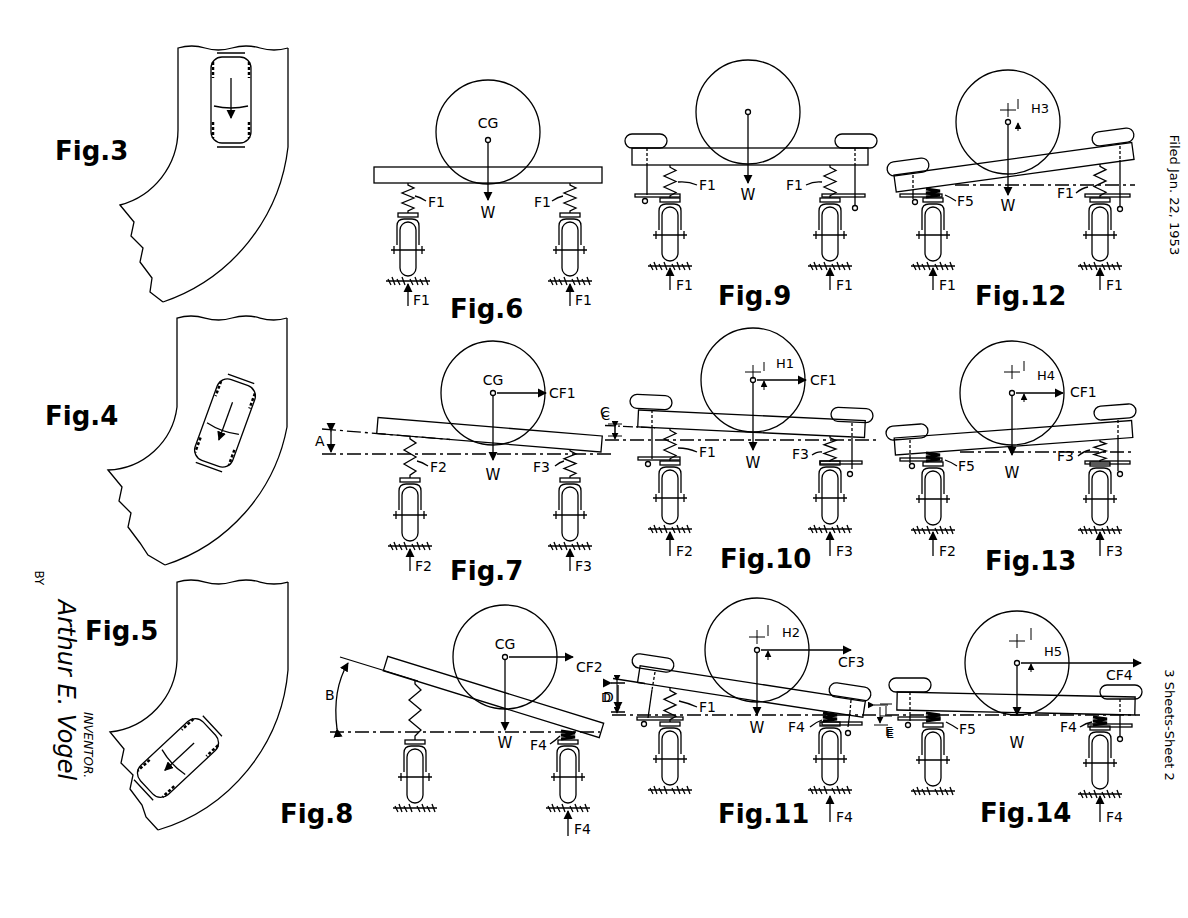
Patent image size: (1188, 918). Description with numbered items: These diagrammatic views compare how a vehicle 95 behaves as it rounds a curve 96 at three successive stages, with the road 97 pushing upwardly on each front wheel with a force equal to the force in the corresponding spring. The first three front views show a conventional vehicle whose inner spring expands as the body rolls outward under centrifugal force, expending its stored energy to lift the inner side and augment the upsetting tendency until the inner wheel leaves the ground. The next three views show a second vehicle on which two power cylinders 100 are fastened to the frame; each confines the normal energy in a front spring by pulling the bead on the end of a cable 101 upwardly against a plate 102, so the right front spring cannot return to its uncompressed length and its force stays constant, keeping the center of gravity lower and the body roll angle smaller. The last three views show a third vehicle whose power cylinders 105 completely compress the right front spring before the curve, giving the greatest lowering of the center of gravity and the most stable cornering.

In FIG. 3, the vehicle 95 is at (255, 100).
In FIG. 4, the vehicle 95 is at (247, 434).
In FIG. 5, the vehicle 95 is at (190, 775).
In FIG. 3, the curve 96 is at (284, 181).
In FIG. 4, the curve 96 is at (256, 501).
In FIG. 5, the curve 96 is at (197, 817).
In FIG. 3, the road 97 is at (218, 237).
In FIG. 4, the road 97 is at (203, 518).
In FIG. 5, the road 97 is at (245, 730).
In FIG. 9, the power cylinder 100 is at (644, 133).
In FIG. 10, the power cylinder 100 is at (655, 397).
In FIG. 11, the power cylinder 100 is at (660, 655).
In FIG. 9, the cable 101 is at (644, 181).
In FIG. 9, the plate 102 is at (640, 198).
In FIG. 12, the power cylinder 105 is at (910, 160).
In FIG. 13, the power cylinder 105 is at (902, 426).
In FIG. 14, the power cylinder 105 is at (912, 678).